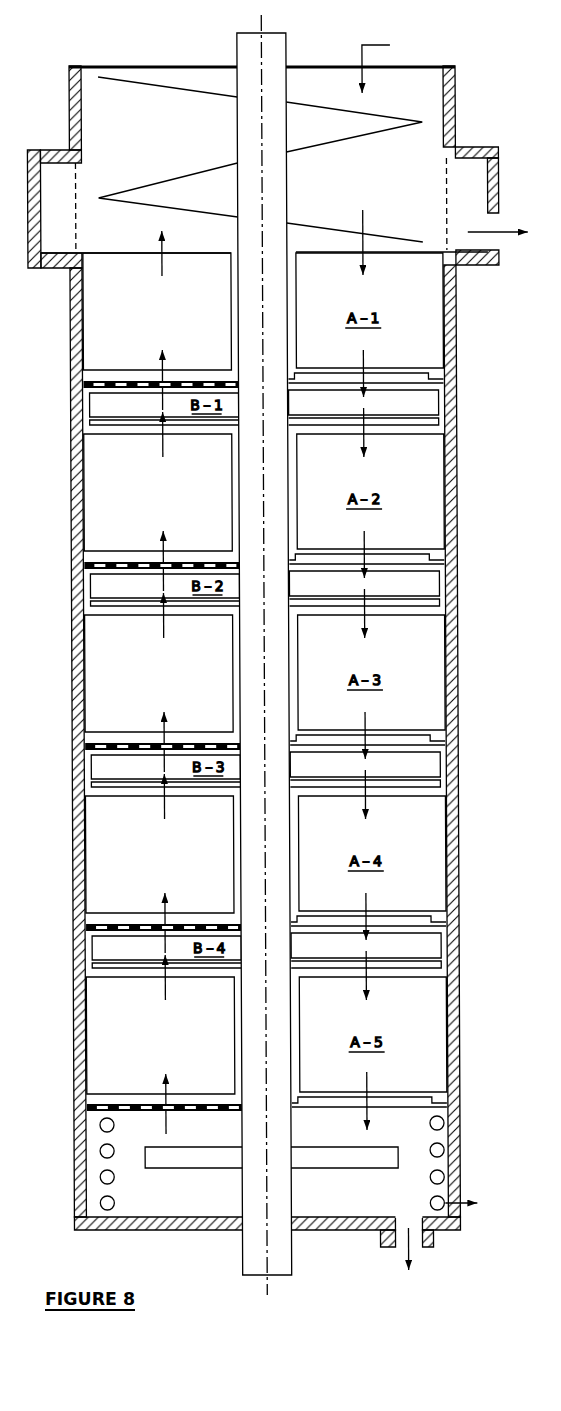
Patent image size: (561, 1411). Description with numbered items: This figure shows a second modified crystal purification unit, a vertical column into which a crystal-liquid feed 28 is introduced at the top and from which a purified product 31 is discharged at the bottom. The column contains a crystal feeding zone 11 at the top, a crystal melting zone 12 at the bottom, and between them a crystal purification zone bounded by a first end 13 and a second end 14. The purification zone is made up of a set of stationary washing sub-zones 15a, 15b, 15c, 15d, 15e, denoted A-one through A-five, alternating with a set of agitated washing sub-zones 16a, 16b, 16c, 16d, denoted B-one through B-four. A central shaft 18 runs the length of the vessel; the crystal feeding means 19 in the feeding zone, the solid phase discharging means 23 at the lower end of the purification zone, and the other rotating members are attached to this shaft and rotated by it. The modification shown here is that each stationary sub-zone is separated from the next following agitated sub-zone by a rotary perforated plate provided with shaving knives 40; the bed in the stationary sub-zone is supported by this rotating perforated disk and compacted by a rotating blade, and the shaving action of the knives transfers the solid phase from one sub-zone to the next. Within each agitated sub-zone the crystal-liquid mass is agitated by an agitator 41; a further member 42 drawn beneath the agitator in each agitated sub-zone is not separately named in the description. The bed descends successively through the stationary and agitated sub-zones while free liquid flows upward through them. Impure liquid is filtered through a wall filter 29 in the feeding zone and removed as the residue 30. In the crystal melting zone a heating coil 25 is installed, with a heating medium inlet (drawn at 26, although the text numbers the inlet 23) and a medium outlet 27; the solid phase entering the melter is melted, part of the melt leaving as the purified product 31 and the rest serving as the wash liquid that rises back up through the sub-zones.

The crystal feeding zone 11 is at (351, 190).
The crystal melting zone 12 is at (359, 1202).
The first end 13 is at (220, 251).
The second end 14 is at (205, 1094).
The stationary washing sub-zone 15a is at (435, 320).
The stationary washing sub-zone 15b is at (435, 499).
The stationary washing sub-zone 15c is at (435, 672).
The stationary washing sub-zone 15d is at (435, 857).
The stationary washing sub-zone 15e is at (435, 1034).
The agitated washing sub-zone 16a is at (437, 408).
The agitated washing sub-zone 16b is at (437, 589).
The agitated washing sub-zone 16c is at (437, 770).
The agitated washing sub-zone 16d is at (437, 947).
The central shaft 18 is at (237, 53).
The crystal feeding means 19 is at (205, 94).
The solid phase discharging means 23 is at (88, 1107).
The heating coil 25 is at (96, 1155).
The coil inlet 26 is at (95, 1125).
The medium outlet 27 is at (471, 1204).
The crystal-liquid feed 28 is at (378, 57).
The wall filter 29 is at (446, 222).
The residue 30 is at (498, 212).
The purified product 31 is at (409, 1263).
The rotary perforated plate with shaving knives 40 is at (90, 384).
The agitator 41 is at (90, 408).
The tray plates 42 is at (90, 428).